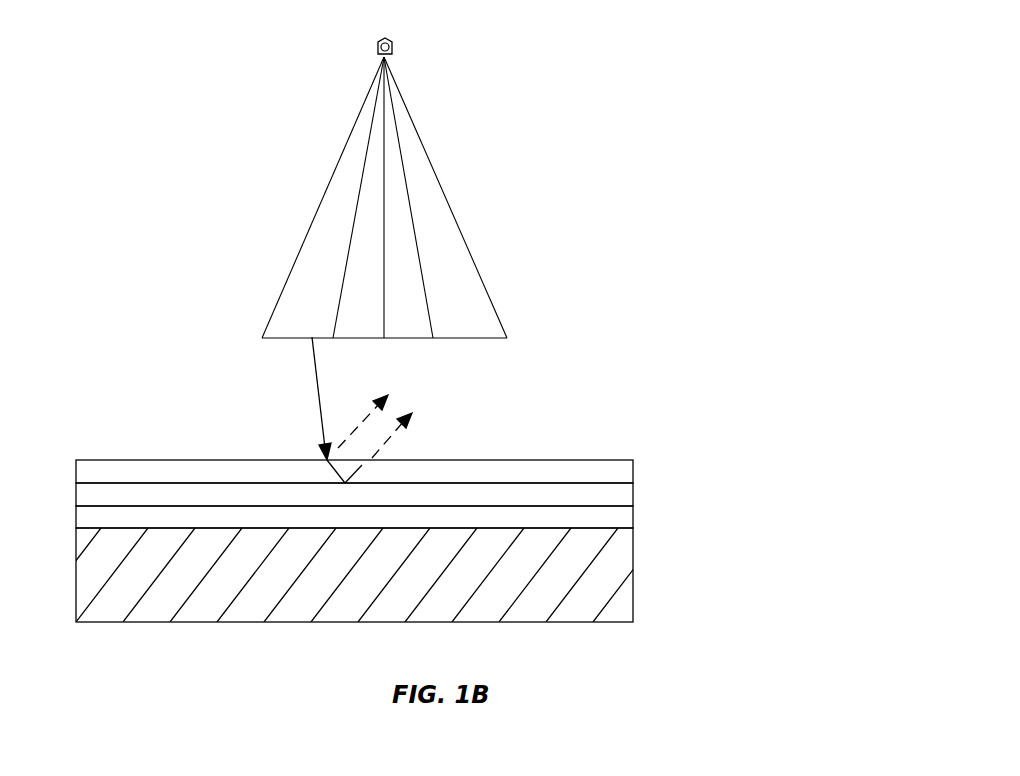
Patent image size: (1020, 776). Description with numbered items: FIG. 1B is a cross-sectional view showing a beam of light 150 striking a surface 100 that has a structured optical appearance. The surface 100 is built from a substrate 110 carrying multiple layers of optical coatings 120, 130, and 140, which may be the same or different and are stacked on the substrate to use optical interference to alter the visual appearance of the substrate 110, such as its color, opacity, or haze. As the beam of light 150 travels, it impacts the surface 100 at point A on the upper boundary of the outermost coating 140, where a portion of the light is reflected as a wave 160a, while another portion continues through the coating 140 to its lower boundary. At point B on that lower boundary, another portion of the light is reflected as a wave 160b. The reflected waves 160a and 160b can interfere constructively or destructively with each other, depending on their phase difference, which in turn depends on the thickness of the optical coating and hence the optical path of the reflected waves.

The surface 100 is at (660, 315).
The substrate 110 is at (633, 592).
The optical coating 120 is at (633, 517).
The optical coating 130 is at (633, 487).
The optical coating 140 is at (633, 470).
The beam of light 150 is at (458, 207).
The reflected wave 160a is at (370, 412).
The reflected wave 160b is at (413, 435).